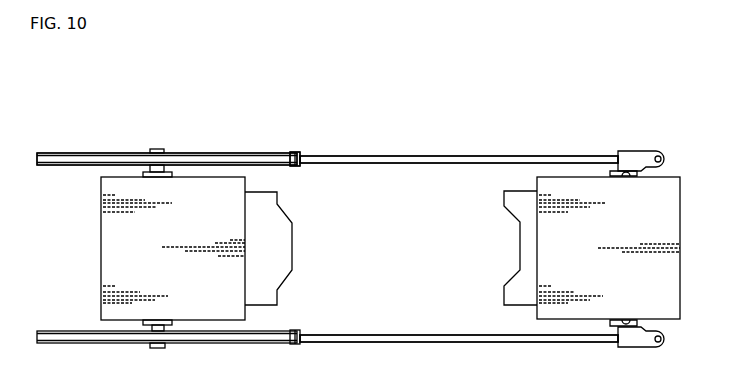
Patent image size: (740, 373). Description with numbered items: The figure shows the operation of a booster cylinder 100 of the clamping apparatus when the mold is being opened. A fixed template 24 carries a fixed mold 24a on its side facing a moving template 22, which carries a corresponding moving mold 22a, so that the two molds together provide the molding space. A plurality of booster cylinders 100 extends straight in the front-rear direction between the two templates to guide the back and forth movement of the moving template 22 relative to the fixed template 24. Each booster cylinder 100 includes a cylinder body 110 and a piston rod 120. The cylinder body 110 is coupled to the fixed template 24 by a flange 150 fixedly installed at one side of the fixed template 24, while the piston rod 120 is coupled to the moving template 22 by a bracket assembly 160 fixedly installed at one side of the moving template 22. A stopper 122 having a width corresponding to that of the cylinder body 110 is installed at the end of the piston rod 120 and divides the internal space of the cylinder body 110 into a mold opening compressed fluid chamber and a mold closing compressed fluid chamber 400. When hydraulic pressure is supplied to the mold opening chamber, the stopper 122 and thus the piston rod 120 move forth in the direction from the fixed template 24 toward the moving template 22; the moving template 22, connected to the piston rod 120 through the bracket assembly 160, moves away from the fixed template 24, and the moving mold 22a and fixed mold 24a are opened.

The booster cylinder 100 is at (221, 141).
The cylinder body 110 is at (120, 152).
The piston rod 120 is at (387, 155).
The stopper 122 is at (296, 152).
The flange 150 is at (161, 149).
The bracket assembly 160 is at (641, 152).
The mold closing compressed fluid chamber 400 is at (300, 166).
The fixed template 24 is at (113, 249).
The fixed mold 24a is at (275, 250).
The moving template 22 is at (590, 192).
The moving mold 22a is at (529, 254).